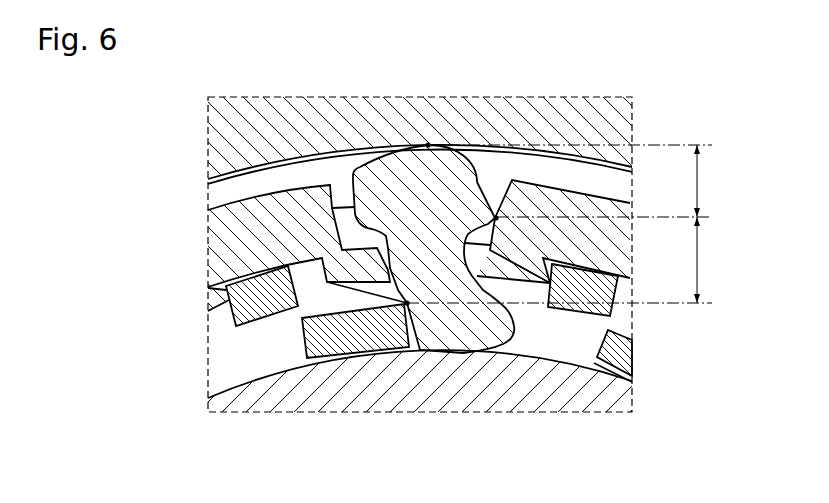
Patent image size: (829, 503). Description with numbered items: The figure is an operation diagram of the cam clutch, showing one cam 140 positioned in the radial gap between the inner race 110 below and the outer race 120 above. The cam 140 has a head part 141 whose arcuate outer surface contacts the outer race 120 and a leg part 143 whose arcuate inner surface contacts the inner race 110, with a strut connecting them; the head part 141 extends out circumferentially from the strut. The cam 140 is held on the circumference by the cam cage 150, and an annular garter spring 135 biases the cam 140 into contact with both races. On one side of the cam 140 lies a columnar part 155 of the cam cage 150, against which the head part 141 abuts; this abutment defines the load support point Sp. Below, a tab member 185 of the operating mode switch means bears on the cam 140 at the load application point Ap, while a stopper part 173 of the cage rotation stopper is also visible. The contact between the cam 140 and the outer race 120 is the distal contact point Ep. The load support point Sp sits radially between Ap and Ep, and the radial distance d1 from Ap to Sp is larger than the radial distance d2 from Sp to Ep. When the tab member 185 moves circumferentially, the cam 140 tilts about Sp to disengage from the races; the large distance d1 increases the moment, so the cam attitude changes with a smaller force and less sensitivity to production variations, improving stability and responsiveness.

The inner race 110 is at (293, 412).
The outer race 120 is at (580, 105).
The garter spring 135 is at (317, 172).
The cam 140 is at (439, 251).
The head part 141 is at (356, 166).
The leg part 143 is at (480, 346).
The cam cage 150 is at (267, 187).
The columnar part 155 is at (552, 193).
The stopper part 173 is at (568, 312).
The tab member 185 is at (343, 359).
The distal contact point Ep is at (428, 145).
The load support point Sp is at (496, 217).
The load application point Ap is at (398, 303).
The radial distance d1 is at (709, 260).
The radial distance d2 is at (710, 181).